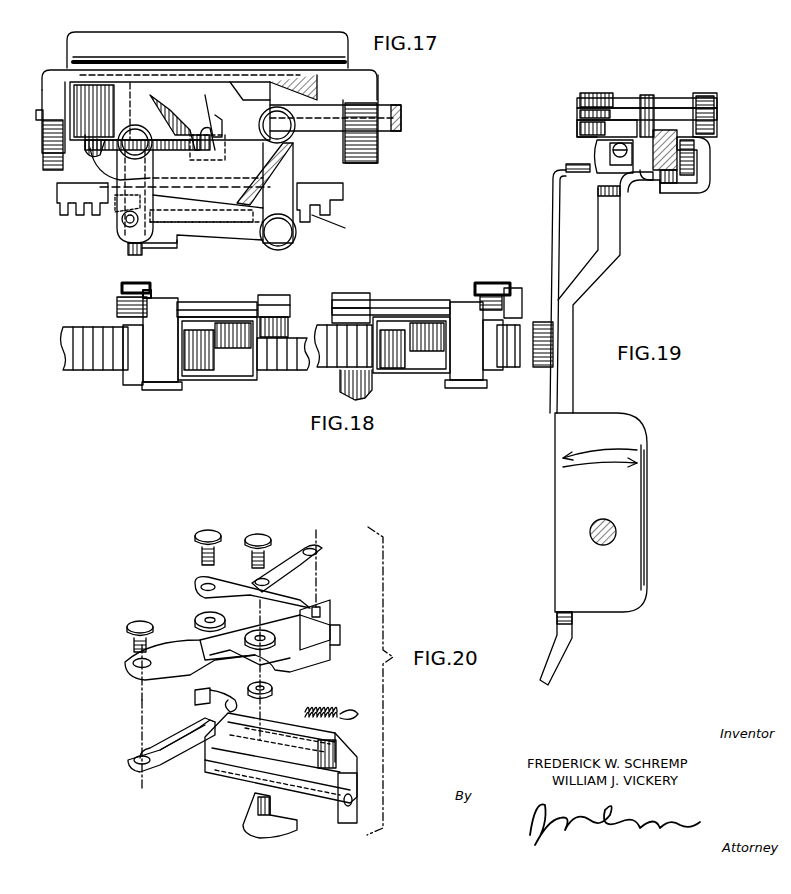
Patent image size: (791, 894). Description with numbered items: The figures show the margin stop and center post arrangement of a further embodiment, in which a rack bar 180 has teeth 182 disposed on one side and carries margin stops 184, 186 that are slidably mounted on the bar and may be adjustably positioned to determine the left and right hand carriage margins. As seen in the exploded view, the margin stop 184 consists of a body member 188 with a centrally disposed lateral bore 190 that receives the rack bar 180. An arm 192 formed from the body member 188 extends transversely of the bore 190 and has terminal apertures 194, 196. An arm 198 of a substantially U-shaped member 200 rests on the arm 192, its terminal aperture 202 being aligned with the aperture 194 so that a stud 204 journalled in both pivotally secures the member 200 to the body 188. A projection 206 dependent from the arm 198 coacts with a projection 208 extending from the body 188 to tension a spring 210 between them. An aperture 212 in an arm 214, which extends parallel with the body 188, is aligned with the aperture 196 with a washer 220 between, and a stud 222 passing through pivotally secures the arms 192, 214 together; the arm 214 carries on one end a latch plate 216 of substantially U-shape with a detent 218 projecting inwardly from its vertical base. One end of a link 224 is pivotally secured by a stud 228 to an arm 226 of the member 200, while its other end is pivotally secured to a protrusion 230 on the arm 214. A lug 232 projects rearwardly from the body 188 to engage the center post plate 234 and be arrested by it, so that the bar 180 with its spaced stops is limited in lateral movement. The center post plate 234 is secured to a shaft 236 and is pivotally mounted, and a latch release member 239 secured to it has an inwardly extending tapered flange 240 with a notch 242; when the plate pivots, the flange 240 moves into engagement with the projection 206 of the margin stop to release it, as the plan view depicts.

In FIG. 17, the rack bar 180 is at (330, 199).
In FIG. 18, the rack bar 180 is at (292, 355).
In FIG. 19, the rack bar 180 is at (673, 183).
In FIG. 17, the teeth 182 is at (323, 217).
In FIG. 18, the teeth 182 is at (105, 357).
In FIG. 18, the margin stop 184 is at (388, 290).
In FIG. 20, the margin stop 184 is at (135, 706).
In FIG. 18, the margin stop 186 is at (220, 302).
In FIG. 20, the body member 188 is at (268, 736).
In FIG. 19, the lateral bore 190 is at (672, 137).
In FIG. 20, the lateral bore 190 is at (336, 752).
In FIG. 17, the arm 192 is at (283, 177).
In FIG. 18, the arm 192 is at (330, 323).
In FIG. 19, the arm 192 is at (580, 128).
In FIG. 20, the arm 192 is at (175, 740).
In FIG. 20, the terminal aperture 194 is at (136, 770).
In FIG. 20, the terminal aperture 196 is at (203, 722).
In FIG. 17, the arm 198 is at (277, 153).
In FIG. 18, the arm 198 is at (297, 317).
In FIG. 19, the arm 198 is at (622, 120).
In FIG. 20, the arm 198 is at (193, 647).
In FIG. 20, the U-shaped member 200 is at (160, 641).
In FIG. 20, the aperture 202 is at (131, 671).
In FIG. 17, the stud 204 is at (280, 127).
In FIG. 19, the stud 204 is at (597, 93).
In FIG. 20, the stud 204 is at (127, 632).
In FIG. 17, the projection 206 is at (208, 138).
In FIG. 19, the projection 206 is at (597, 155).
In FIG. 20, the projection 206 is at (197, 698).
In FIG. 17, the projection 208 is at (50, 190).
In FIG. 19, the projection 208 is at (645, 147).
In FIG. 20, the projection 208 is at (353, 805).
In FIG. 17, the tension spring 210 is at (90, 150).
In FIG. 19, the tension spring 210 is at (613, 148).
In FIG. 20, the tension spring 210 is at (352, 713).
In FIG. 20, the aperture 212 is at (203, 586).
In FIG. 17, the arm 214 is at (223, 233).
In FIG. 18, the arm 214 is at (240, 303).
In FIG. 20, the arm 214 is at (232, 587).
In FIG. 17, the latch plate 216 is at (158, 250).
In FIG. 18, the latch plate 216 is at (167, 365).
In FIG. 19, the latch plate 216 is at (707, 175).
In FIG. 20, the latch plate 216 is at (330, 613).
In FIG. 17, the detent 218 is at (128, 255).
In FIG. 18, the detent 218 is at (137, 345).
In FIG. 19, the detent 218 is at (692, 148).
In FIG. 20, the detent 218 is at (340, 638).
In FIG. 20, the washer 220 is at (207, 617).
In FIG. 17, the stud 222 is at (284, 231).
In FIG. 18, the stud 222 is at (280, 295).
In FIG. 19, the stud 222 is at (700, 100).
In FIG. 20, the stud 222 is at (208, 530).
In FIG. 17, the link 224 is at (120, 210).
In FIG. 18, the link 224 is at (117, 298).
In FIG. 19, the link 224 is at (620, 102).
In FIG. 20, the link 224 is at (317, 557).
In FIG. 17, the arm 226 is at (122, 217).
In FIG. 18, the arm 226 is at (483, 282).
In FIG. 20, the arm 226 is at (277, 667).
In FIG. 17, the stud 228 is at (135, 133).
In FIG. 18, the stud 228 is at (123, 288).
In FIG. 20, the stud 228 is at (270, 537).
In FIG. 18, the protrusion 230 is at (151, 290).
In FIG. 20, the protrusion 230 is at (320, 605).
In FIG. 18, the lug 232 is at (183, 388).
In FIG. 19, the lug 232 is at (632, 188).
In FIG. 20, the lug 232 is at (260, 823).
In FIG. 19, the center post plate 234 is at (613, 252).
In FIG. 17, the shaft 236 is at (393, 130).
In FIG. 19, the shaft 236 is at (617, 532).
In FIG. 17, the latch release member 239 is at (193, 82).
In FIG. 19, the latch release member 239 is at (552, 242).
In FIG. 17, the flange 240 is at (243, 100).
In FIG. 19, the flange 240 is at (585, 175).
In FIG. 17, the notch 242 is at (213, 137).